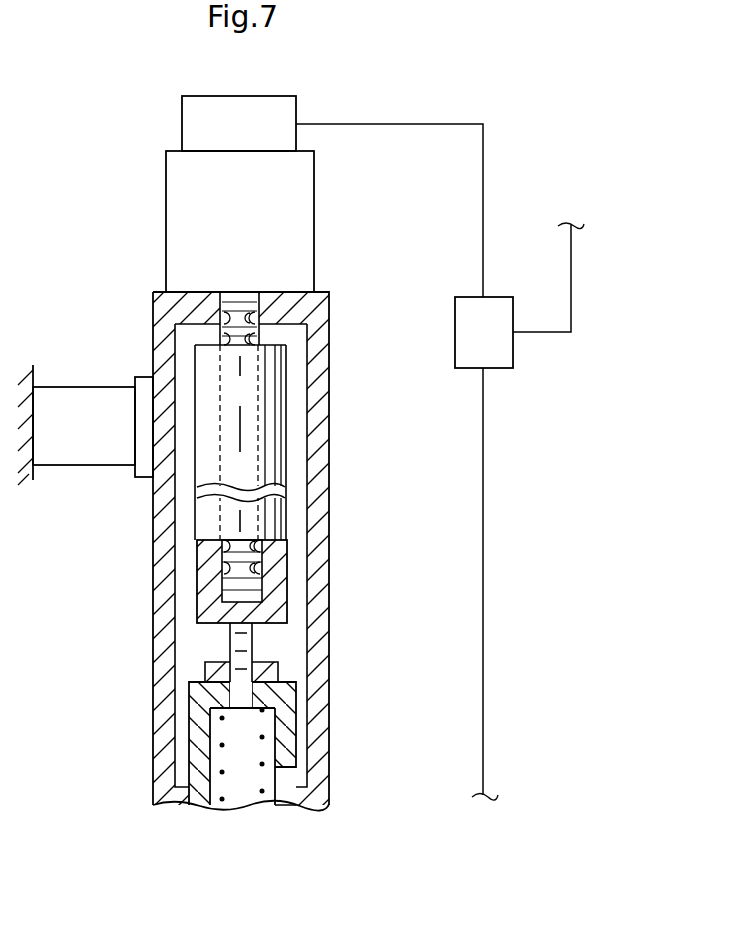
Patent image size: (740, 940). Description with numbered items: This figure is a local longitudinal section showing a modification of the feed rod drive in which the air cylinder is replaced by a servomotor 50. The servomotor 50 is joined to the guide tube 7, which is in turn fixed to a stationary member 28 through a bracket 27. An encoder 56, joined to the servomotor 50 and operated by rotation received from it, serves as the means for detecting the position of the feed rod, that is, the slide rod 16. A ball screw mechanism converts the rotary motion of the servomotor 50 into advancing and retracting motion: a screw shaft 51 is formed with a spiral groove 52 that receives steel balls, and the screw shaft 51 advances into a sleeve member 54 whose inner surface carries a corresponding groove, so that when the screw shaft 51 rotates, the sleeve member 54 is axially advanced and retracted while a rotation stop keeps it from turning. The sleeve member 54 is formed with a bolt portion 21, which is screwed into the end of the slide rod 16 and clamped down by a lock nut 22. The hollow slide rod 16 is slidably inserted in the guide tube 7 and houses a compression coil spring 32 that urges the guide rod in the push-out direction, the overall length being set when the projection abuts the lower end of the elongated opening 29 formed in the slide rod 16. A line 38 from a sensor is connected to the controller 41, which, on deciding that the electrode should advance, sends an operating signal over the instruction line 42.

The guide tube 7 is at (330, 318).
The slide rod 16 is at (189, 742).
The bolt portion 21 is at (253, 650).
The lock nut 22 is at (279, 680).
The bracket 27 is at (84, 387).
The stationary member 28 is at (33, 437).
The elongated opening 29 is at (287, 797).
The compression coil spring 32 is at (224, 772).
The line 38 is at (485, 580).
The controller 41 is at (484, 332).
The instruction line 42 is at (571, 290).
The servomotor 50 is at (166, 226).
The screw shaft 51 is at (243, 292).
The spiral groove 52 is at (222, 316).
The sleeve member 54 is at (288, 455).
The encoder 56 is at (182, 122).